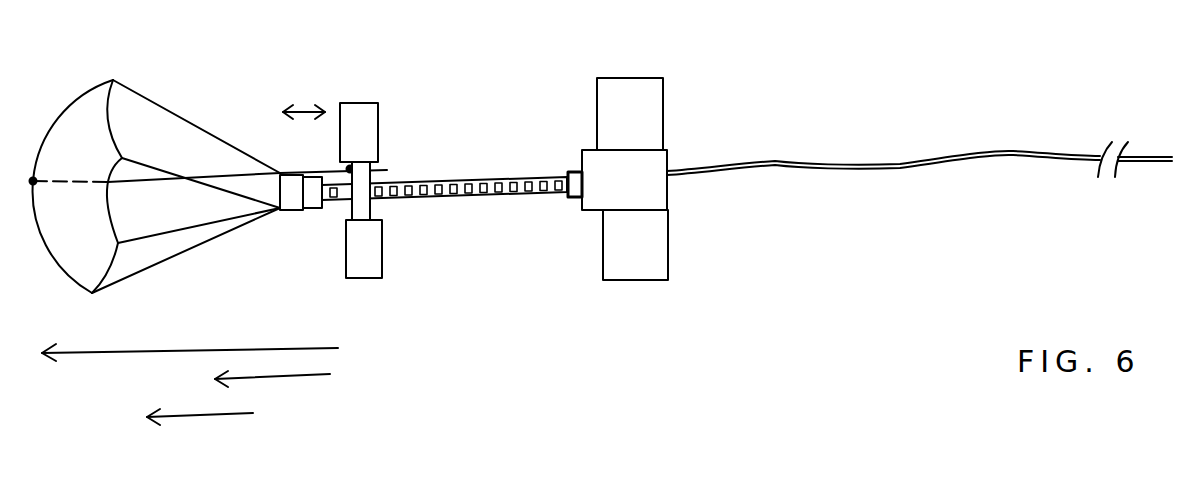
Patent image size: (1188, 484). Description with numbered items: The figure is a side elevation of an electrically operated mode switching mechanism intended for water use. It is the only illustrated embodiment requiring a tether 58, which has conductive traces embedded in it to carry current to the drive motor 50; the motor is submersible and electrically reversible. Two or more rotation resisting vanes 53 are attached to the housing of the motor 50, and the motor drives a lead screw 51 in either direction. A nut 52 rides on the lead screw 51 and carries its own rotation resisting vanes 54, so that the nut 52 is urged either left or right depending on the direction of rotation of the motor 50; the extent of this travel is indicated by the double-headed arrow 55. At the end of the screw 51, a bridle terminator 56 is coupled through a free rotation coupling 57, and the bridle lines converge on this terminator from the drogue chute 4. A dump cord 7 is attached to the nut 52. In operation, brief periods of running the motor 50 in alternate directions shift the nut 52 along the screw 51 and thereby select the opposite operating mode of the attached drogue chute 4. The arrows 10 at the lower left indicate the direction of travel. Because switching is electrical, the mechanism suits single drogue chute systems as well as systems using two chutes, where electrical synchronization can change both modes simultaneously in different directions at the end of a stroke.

The drogue chute 4 is at (79, 122).
The dump cord 7 is at (233, 168).
The direction of travel 10 is at (190, 384).
The drive motor 50 is at (653, 163).
The lead screw 51 is at (495, 170).
The nut 52 is at (370, 167).
The rotation resisting vanes 53 is at (633, 85).
The rotation resisting vanes 54 is at (378, 110).
The travel range 55 is at (302, 100).
The bridle terminator 56 is at (289, 210).
The free rotation coupling 57 is at (318, 208).
The tether 58 is at (902, 155).